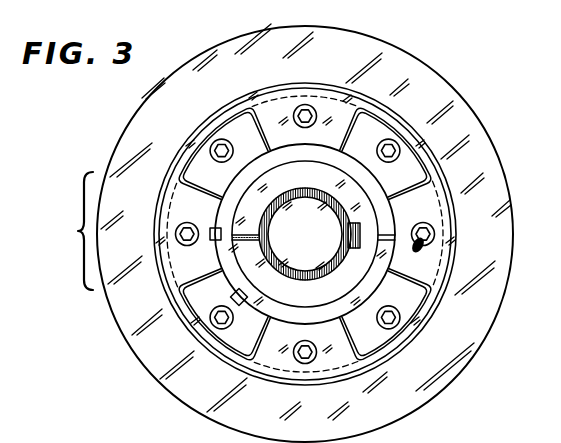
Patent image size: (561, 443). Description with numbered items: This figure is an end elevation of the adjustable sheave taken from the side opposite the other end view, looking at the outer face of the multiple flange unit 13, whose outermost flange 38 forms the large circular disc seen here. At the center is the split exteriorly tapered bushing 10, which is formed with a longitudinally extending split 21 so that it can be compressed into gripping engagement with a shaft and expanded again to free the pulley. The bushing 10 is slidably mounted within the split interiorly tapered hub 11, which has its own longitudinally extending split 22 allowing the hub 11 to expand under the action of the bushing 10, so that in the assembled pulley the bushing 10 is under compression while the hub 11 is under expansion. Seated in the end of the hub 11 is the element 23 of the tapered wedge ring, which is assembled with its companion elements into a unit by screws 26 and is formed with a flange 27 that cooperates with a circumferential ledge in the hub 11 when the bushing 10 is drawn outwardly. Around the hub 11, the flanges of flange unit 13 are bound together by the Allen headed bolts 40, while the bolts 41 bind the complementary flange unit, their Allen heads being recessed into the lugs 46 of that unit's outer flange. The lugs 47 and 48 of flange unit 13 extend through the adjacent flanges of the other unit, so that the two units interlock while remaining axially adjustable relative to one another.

The split exteriorly tapered bushing 10 is at (316, 306).
The split interiorly tapered hub 11 is at (237, 188).
The multiple flange unit 13 is at (73, 231).
The longitudinally extending split 21 is at (250, 233).
The longitudinally extending split 22 is at (392, 220).
The element of tapered ring 23 is at (307, 271).
The screws 26 is at (324, 193).
The flange 27 is at (354, 249).
The flange 38 is at (132, 344).
The Allen headed bolts 40 is at (316, 97).
The Allen headed bolts 41 is at (220, 141).
The lugs 46 is at (205, 148).
The lugs 47 is at (212, 228).
The lugs 48 is at (287, 84).